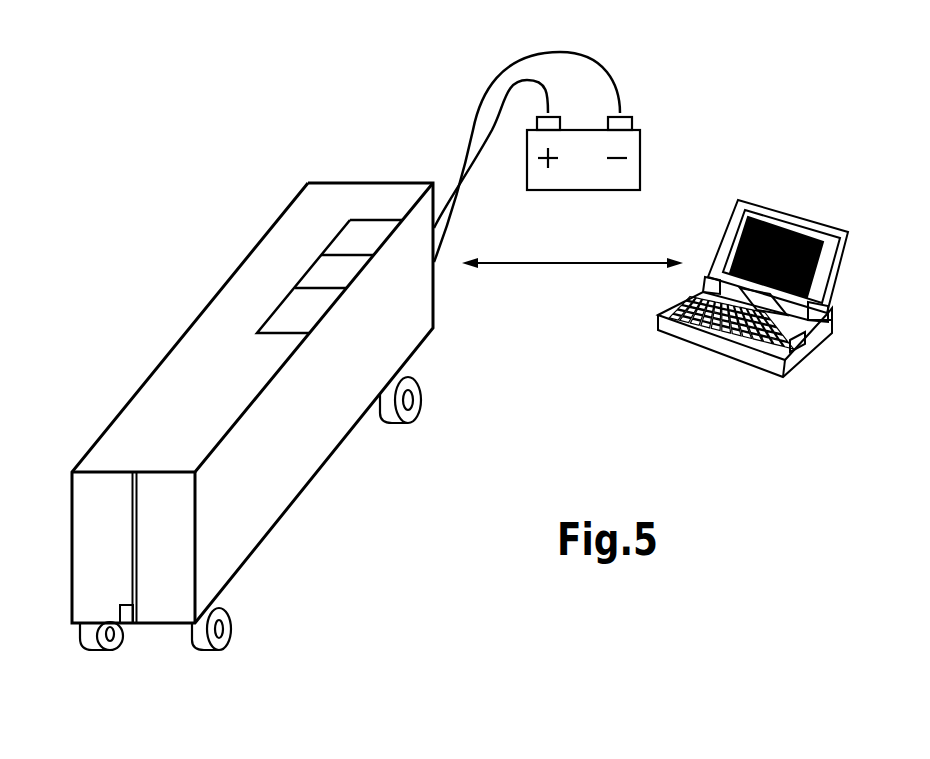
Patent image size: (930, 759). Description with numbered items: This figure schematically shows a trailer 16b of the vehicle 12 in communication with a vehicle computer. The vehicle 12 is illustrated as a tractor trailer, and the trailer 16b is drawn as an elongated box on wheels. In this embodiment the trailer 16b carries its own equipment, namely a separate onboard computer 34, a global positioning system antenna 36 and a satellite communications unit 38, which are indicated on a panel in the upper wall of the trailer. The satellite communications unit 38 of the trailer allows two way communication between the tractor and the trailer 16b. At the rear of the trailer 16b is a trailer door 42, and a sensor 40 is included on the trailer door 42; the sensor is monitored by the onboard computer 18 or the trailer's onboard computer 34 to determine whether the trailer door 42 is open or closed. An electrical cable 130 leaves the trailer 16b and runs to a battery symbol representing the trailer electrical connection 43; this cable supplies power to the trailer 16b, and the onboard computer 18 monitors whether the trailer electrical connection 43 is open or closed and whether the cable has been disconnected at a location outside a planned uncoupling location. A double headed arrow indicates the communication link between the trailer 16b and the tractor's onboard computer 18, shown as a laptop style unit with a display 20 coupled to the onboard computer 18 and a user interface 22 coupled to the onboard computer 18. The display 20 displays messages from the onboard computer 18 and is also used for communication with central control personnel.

The vehicle 12 is at (355, 150).
The trailer 16b is at (207, 340).
The onboard computer 34 is at (307, 313).
The global positioning system antenna 36 is at (342, 272).
The satellite communications unit 38 is at (368, 237).
The sensor 40 is at (130, 613).
The trailer door 42 is at (107, 540).
The electrical cable 130 is at (470, 193).
The trailer electrical connection 43 is at (627, 115).
The onboard computer 18 is at (782, 220).
The display 20 is at (740, 247).
The user interface 22 is at (742, 337).